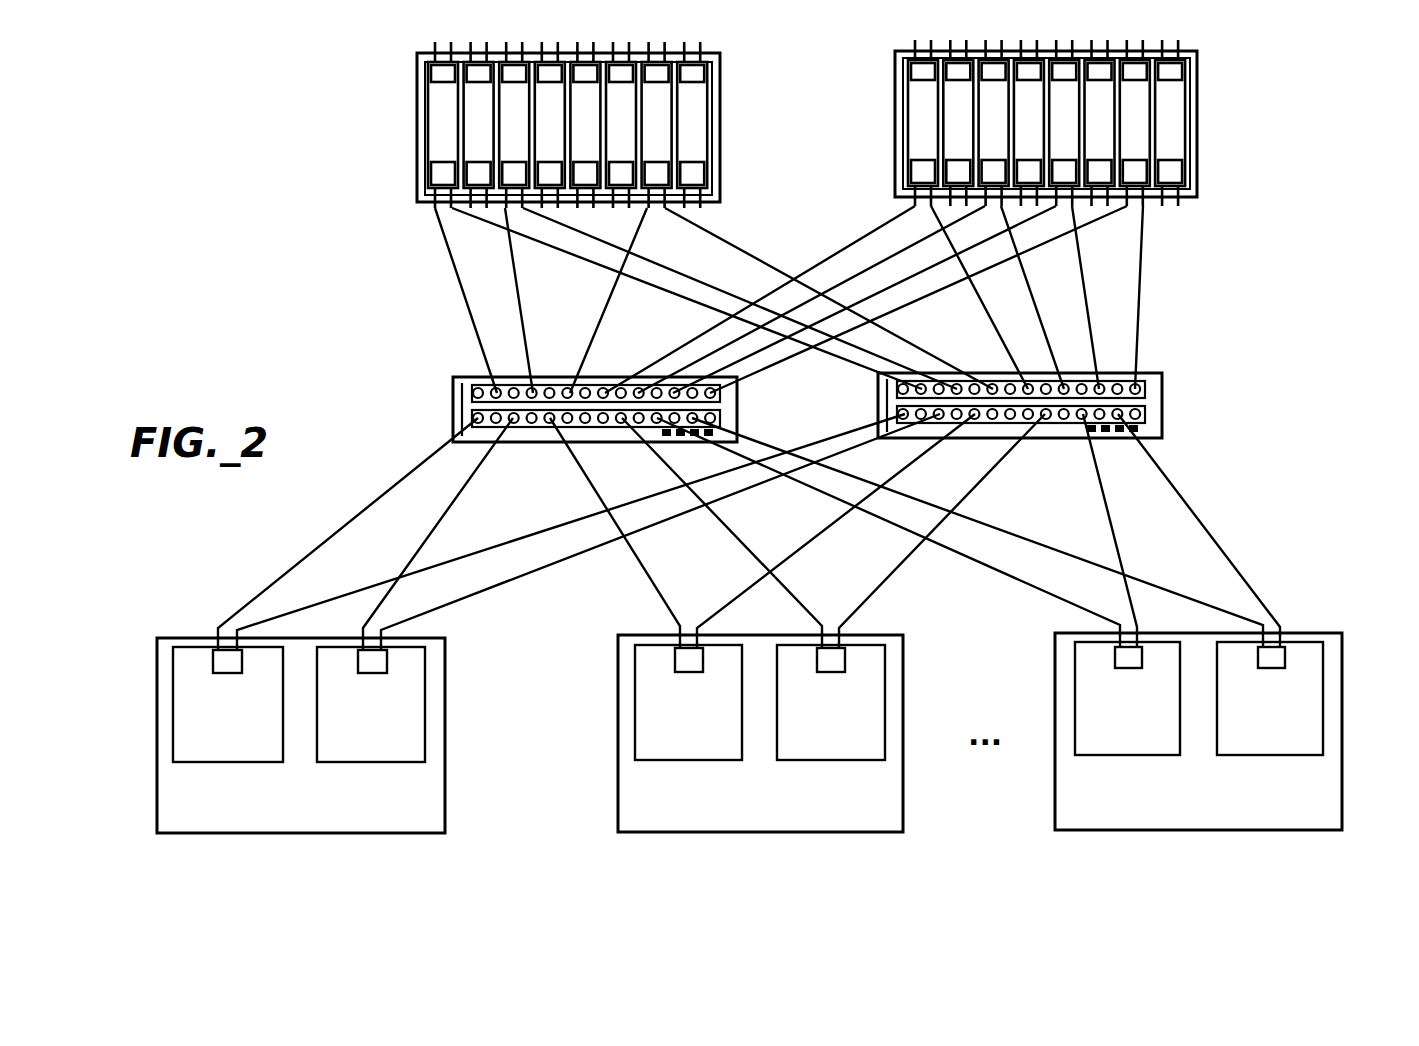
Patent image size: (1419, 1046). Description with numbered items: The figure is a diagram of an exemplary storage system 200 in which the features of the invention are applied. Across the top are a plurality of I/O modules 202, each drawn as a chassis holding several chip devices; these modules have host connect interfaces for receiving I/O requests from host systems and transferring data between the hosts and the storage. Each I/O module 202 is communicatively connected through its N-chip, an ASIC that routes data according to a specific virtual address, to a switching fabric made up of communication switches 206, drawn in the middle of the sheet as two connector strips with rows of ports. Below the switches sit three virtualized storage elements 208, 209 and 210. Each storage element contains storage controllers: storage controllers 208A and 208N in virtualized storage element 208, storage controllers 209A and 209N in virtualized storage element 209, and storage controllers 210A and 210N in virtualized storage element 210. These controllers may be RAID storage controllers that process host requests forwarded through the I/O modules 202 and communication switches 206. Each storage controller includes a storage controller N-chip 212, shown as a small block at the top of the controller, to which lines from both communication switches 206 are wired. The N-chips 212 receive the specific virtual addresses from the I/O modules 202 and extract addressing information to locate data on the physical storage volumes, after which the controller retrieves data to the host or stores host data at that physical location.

The storage system 200 is at (257, 82).
The I/O module 202 is at (457, 127).
The communication switch 206 is at (460, 378).
The virtualized storage element 208 is at (180, 638).
The storage controller 208A is at (257, 763).
The storage controller 208N is at (396, 763).
The virtualized storage element 209 is at (635, 635).
The storage controller 209A is at (718, 761).
The storage controller 209N is at (862, 761).
The virtualized storage element 210 is at (1288, 633).
The storage controller 210A is at (1155, 756).
The storage controller 210N is at (1312, 756).
The storage controller N-chip 212 is at (1318, 598).